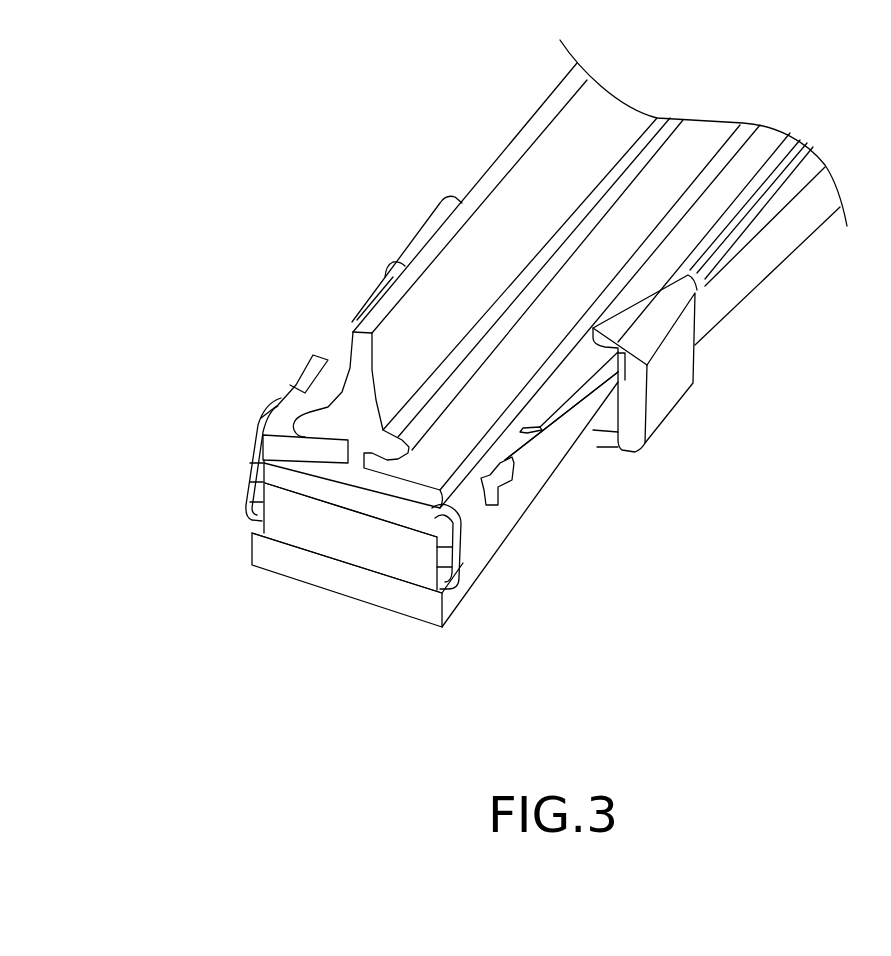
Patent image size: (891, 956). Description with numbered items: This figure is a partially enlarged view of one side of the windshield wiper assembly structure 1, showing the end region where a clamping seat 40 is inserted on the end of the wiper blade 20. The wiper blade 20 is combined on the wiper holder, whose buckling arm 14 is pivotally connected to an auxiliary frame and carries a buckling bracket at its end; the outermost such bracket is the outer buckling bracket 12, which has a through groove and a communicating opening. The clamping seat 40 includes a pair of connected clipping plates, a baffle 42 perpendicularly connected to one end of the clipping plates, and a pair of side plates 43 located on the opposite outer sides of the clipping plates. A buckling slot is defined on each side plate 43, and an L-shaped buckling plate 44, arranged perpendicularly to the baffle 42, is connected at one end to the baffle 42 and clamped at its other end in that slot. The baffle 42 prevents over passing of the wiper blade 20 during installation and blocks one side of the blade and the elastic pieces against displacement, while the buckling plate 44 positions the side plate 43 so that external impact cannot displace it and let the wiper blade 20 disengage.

The windshield wiper assembly structure 1 is at (284, 228).
The outer buckling bracket 12 is at (663, 393).
The buckling arm 14 is at (777, 252).
The wiper blade 20 is at (265, 570).
The clamping seat 40 is at (493, 545).
The baffle 42 is at (387, 555).
The side plate 43 is at (536, 467).
The buckling plate 44 is at (502, 487).